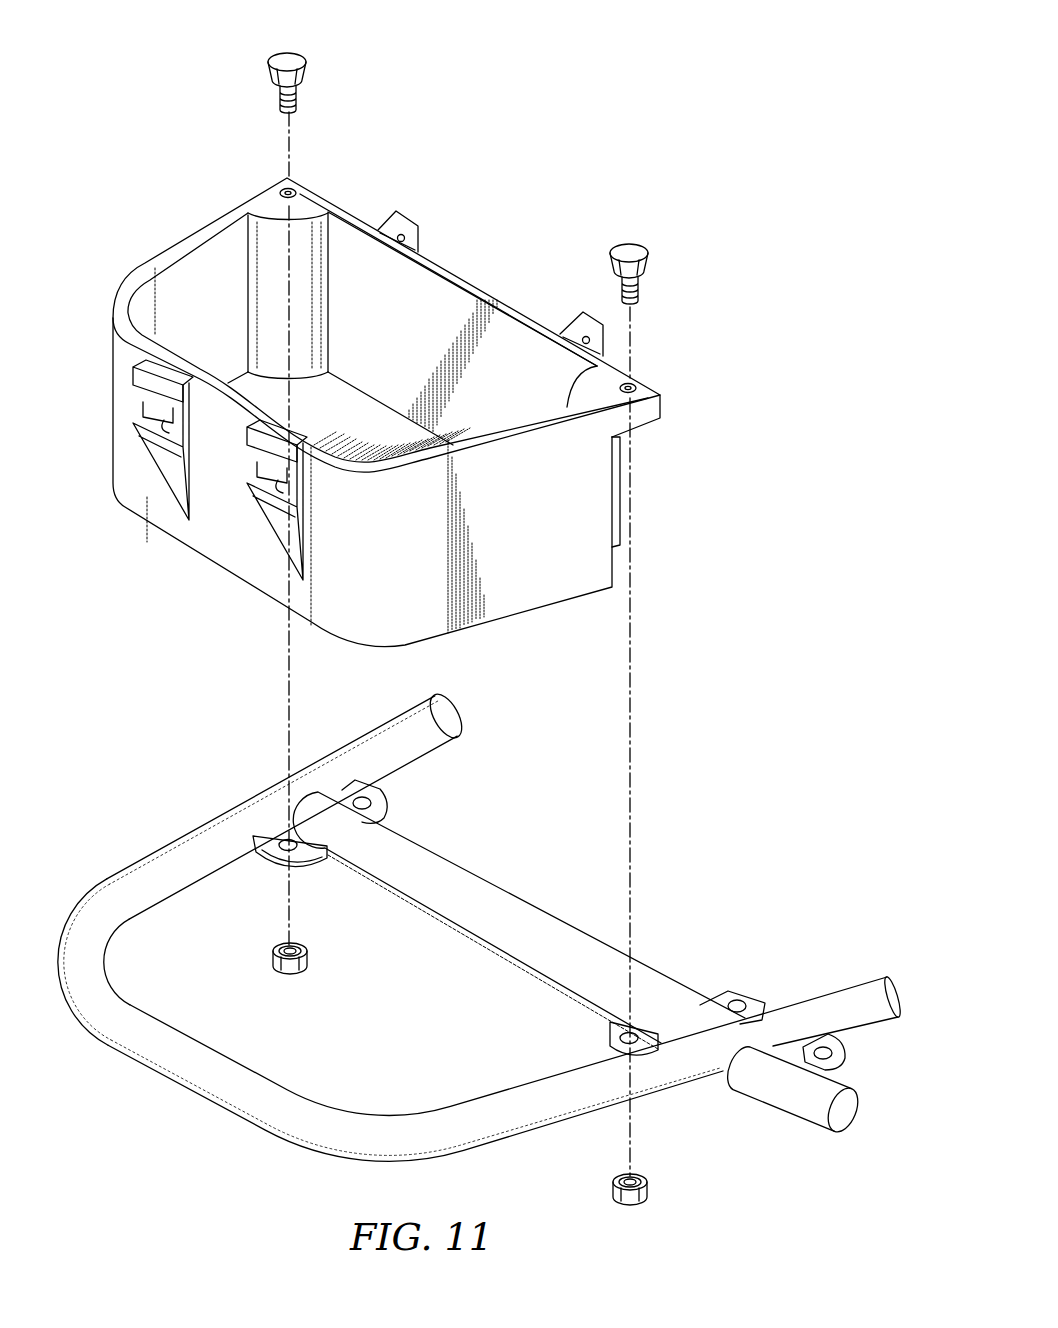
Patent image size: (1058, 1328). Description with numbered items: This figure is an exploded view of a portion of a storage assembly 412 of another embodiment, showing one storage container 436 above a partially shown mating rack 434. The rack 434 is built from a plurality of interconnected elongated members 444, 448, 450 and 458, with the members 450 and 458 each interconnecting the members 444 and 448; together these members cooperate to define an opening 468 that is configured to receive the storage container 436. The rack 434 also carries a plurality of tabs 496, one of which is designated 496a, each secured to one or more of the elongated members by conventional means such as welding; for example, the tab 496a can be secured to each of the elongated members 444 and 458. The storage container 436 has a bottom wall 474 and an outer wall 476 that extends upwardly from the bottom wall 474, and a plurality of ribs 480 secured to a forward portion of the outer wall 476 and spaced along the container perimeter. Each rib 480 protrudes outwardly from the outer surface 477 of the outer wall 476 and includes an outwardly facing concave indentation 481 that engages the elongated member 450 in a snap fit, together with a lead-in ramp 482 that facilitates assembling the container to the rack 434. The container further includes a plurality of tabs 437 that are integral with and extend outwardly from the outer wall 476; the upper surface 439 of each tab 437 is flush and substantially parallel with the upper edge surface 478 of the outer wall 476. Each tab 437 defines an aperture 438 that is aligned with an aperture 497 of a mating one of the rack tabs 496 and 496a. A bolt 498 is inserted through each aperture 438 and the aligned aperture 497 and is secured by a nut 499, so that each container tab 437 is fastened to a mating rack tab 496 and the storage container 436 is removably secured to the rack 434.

The storage assembly 412 is at (508, 135).
The rack 434 is at (254, 1133).
The storage container 436 is at (424, 242).
The tabs 437 is at (262, 183).
The aperture 438 is at (302, 195).
The upper surface 439 is at (317, 198).
The elongated member 444 is at (156, 852).
The elongated member 448 is at (507, 1143).
The elongated member 450 is at (171, 1087).
The elongated member 458 is at (482, 880).
The opening 468 is at (486, 984).
The bottom wall 474 is at (354, 406).
The outer wall 476 is at (616, 571).
The outer surface 477 is at (170, 537).
The upper edge surface 478 is at (483, 295).
The ribs 480 is at (134, 452).
The concave indentation 481 is at (148, 410).
The lead-in ramp 482 is at (160, 474).
The tabs 496 is at (386, 808).
The tab 496a is at (262, 870).
The aperture 497 is at (310, 865).
The bolt 498 is at (288, 50).
The nut 499 is at (270, 955).